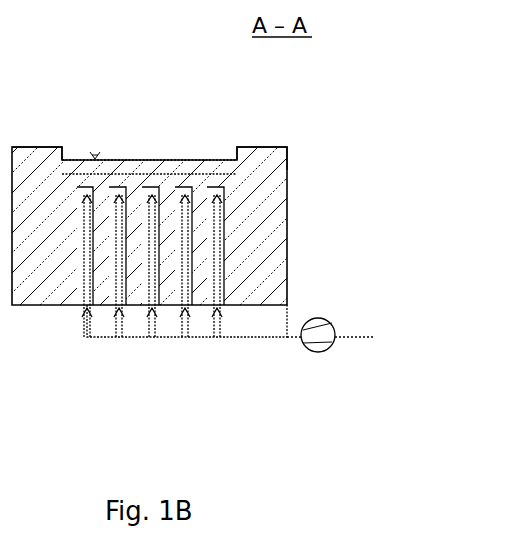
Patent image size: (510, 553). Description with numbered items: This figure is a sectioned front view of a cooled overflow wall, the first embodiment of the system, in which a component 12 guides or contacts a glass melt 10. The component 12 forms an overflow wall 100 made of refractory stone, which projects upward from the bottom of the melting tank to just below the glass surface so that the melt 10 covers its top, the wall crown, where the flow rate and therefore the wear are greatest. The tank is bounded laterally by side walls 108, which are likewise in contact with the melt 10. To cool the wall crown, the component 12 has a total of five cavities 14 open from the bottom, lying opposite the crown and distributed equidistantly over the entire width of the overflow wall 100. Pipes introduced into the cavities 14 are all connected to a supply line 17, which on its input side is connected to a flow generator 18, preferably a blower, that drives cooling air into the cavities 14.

The glass melt 10 is at (208, 150).
The component 12 is at (129, 185).
The overflow wall 100 is at (149, 103).
The cavities 14 is at (217, 338).
The supply line 17 is at (250, 336).
The flow generator 18 is at (323, 332).
The side walls 108 is at (43, 157).